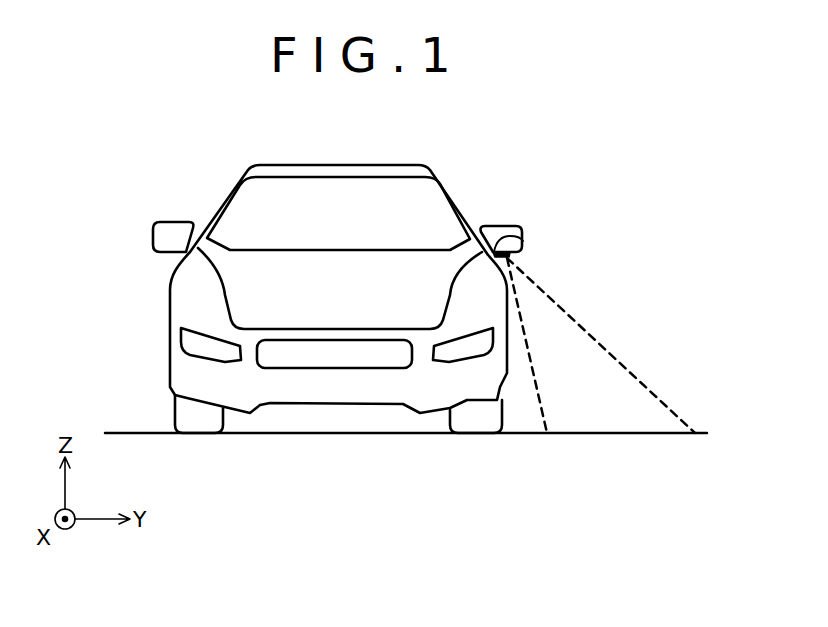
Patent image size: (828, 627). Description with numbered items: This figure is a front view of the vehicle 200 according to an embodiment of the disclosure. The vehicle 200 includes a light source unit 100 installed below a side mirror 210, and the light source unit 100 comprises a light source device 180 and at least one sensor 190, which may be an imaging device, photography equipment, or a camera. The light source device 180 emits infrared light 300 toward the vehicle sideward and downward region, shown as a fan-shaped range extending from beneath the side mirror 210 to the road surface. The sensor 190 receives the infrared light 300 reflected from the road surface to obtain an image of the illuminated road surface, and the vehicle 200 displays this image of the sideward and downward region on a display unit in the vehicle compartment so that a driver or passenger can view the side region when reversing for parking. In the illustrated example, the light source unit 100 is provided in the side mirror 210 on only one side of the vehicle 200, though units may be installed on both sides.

The light source unit 100 is at (591, 236).
The light source device 180 is at (510, 257).
The sensor 190 is at (522, 240).
The vehicle 200 is at (560, 130).
The side mirror 210 is at (508, 226).
The infrared light 300 is at (593, 337).